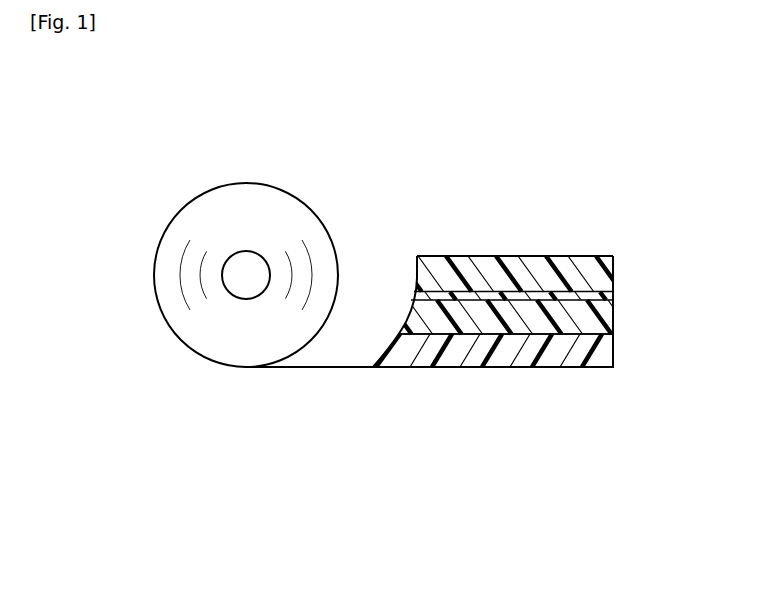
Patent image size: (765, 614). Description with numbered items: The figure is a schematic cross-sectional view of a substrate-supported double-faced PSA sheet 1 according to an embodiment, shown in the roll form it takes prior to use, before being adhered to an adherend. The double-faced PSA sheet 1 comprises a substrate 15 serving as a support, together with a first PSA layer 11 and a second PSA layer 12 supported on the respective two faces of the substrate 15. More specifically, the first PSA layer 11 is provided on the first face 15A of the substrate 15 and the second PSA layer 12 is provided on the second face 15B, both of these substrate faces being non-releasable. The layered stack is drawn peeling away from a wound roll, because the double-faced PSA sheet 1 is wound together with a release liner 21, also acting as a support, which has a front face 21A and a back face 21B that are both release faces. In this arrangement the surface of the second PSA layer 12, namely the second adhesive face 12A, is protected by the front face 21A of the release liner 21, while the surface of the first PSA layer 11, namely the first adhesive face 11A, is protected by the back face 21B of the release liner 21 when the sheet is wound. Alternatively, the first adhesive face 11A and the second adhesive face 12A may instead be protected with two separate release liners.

The double-faced PSA sheet 1 is at (549, 183).
The first PSA layer 11 is at (614, 265).
The first adhesive face 11A is at (578, 257).
The substrate 15 is at (615, 293).
The first face 15A is at (441, 291).
The second face 15B is at (440, 300).
The second PSA layer 12 is at (615, 313).
The second adhesive face 12A is at (615, 348).
The release liner 21 is at (616, 360).
The front face 21A is at (426, 332).
The back face 21B is at (435, 368).